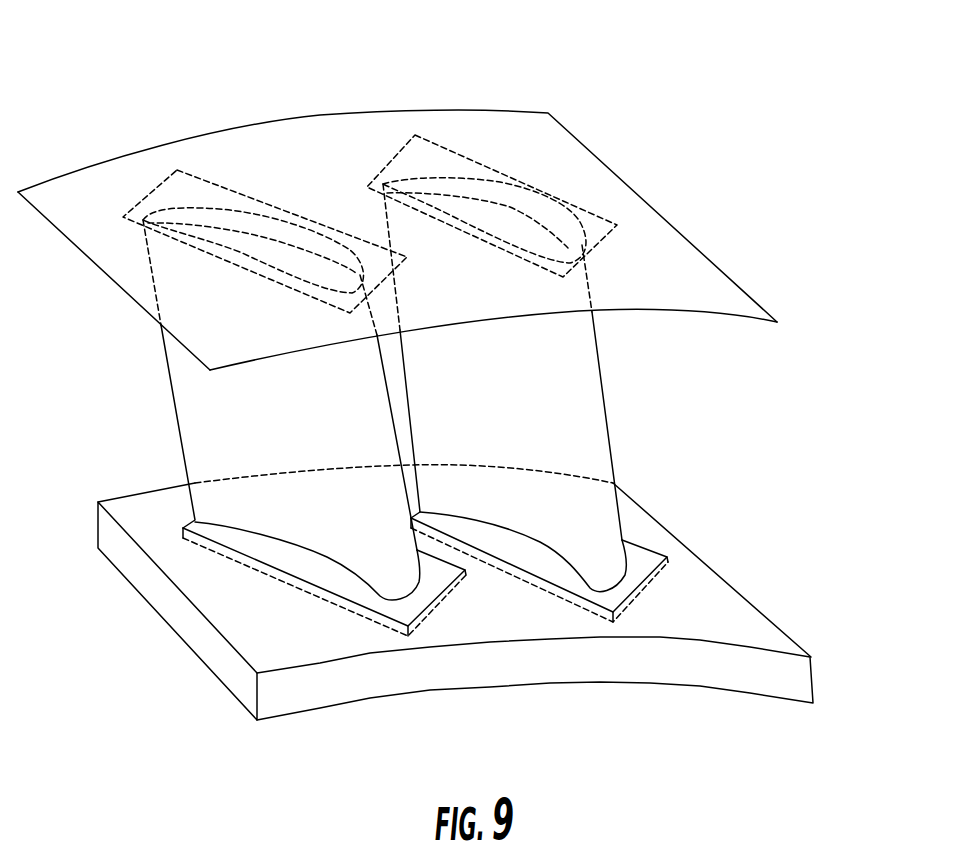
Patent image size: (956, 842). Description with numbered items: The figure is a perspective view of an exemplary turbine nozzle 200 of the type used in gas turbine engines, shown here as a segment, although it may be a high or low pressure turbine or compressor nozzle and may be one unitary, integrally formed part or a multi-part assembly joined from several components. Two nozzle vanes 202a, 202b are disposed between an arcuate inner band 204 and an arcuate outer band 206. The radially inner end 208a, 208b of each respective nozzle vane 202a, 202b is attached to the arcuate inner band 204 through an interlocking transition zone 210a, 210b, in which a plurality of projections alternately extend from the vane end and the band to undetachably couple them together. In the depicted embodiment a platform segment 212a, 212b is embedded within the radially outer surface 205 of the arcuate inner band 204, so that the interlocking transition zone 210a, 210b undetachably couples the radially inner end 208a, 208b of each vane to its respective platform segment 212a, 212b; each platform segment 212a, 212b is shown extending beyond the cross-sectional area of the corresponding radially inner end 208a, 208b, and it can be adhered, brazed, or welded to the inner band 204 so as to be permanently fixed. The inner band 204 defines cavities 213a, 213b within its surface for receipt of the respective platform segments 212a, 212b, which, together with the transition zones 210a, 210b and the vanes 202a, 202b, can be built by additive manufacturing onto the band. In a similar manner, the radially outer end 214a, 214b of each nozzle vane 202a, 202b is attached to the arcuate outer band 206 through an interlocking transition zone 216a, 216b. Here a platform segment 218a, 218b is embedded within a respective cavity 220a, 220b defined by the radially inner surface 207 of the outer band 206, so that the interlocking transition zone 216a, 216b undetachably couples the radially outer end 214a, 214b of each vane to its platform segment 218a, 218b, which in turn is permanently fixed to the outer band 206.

The turbine nozzle 200 is at (665, 78).
The nozzle vane 202a is at (237, 412).
The nozzle vane 202b is at (560, 407).
The arcuate inner band 204 is at (737, 670).
The radially outer surface 205 is at (740, 620).
The arcuate outer band 206 is at (683, 277).
The radially inner surface 207 is at (657, 318).
The radially inner end 208a is at (318, 555).
The radially inner end 208b is at (552, 562).
The interlocking transition zone 210a is at (375, 572).
The interlocking transition zone 210b is at (598, 580).
The platform segment 212a is at (435, 580).
The platform segment 212b is at (637, 557).
The cavity 213a is at (242, 563).
The cavity 213b is at (655, 600).
The radially outer end 214a is at (308, 245).
The radially outer end 214b is at (524, 205).
The interlocking transition zone 216a is at (165, 168).
The interlocking transition zone 216b is at (615, 190).
The platform segment 218a is at (187, 182).
The platform segment 218b is at (405, 163).
The cavity 220a is at (233, 178).
The cavity 220b is at (450, 162).